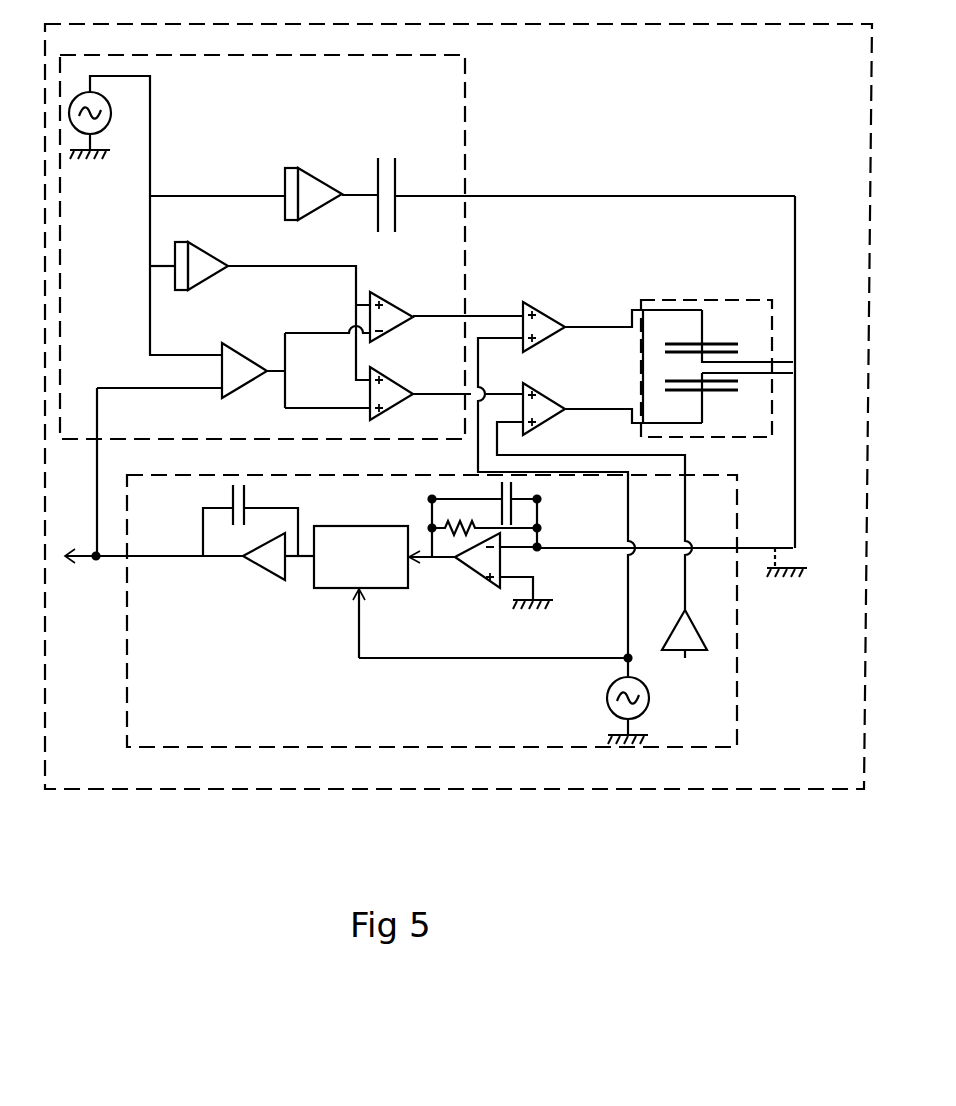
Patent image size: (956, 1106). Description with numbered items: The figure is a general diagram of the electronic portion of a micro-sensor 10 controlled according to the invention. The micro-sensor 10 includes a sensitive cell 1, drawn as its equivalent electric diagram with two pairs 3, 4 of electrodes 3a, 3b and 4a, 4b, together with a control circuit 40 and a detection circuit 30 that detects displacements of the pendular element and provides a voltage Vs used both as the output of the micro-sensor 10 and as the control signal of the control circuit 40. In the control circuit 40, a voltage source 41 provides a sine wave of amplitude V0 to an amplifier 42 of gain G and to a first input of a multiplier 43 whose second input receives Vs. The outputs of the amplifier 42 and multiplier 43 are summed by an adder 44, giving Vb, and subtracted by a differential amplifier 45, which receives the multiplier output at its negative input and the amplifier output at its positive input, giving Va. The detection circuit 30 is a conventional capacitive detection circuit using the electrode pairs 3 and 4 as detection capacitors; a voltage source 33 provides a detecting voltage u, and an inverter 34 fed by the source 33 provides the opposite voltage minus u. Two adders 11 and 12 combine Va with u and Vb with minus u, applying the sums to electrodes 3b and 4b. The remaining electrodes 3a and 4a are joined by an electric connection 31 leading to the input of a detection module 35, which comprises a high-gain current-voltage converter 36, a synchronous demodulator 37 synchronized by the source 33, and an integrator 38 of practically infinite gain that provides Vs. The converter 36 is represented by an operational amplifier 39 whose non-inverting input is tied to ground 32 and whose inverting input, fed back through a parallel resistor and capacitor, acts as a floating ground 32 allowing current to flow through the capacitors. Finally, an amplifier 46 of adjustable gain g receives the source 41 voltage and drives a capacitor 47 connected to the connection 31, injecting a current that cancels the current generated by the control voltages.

The sensitive cell 1 is at (663, 300).
The electrode pair 3 is at (750, 287).
The electrode 3a is at (723, 352).
The electrode 3b is at (708, 343).
The electrode pair 4 is at (751, 436).
The electrode 4a is at (731, 383).
The electrode 4b is at (712, 392).
The micro-sensor 10 is at (737, 790).
The adder 11 is at (540, 302).
The adder 12 is at (540, 383).
The detection circuit 30 is at (435, 588).
The electric connection 31 is at (795, 515).
The ground 32 is at (542, 598).
The voltage source 33 is at (614, 722).
The inverter 34 is at (700, 630).
The detection module 35 is at (245, 688).
The current-voltage converter 36 is at (452, 576).
The synchronous demodulator 37 is at (333, 590).
The integrator 38 is at (258, 590).
The operational amplifier 39 is at (483, 580).
The control circuit 40 is at (465, 88).
The voltage source 41 is at (76, 92).
The amplifier 42 is at (196, 243).
The multiplier 43 is at (237, 342).
The adder 44 is at (388, 367).
The differential amplifier 45 is at (381, 292).
The amplifier 46 is at (303, 168).
The capacitor 47 is at (387, 156).